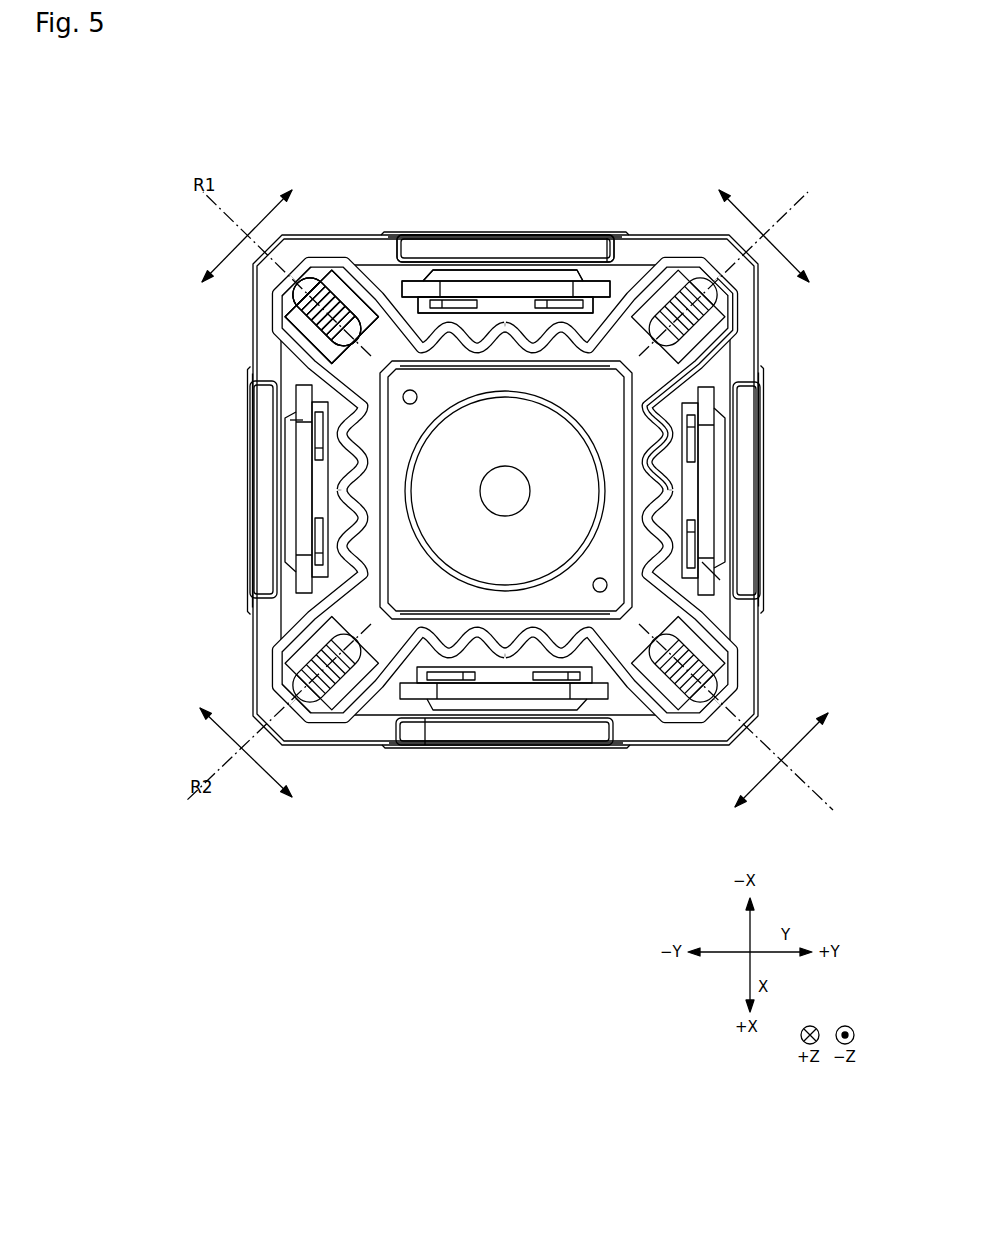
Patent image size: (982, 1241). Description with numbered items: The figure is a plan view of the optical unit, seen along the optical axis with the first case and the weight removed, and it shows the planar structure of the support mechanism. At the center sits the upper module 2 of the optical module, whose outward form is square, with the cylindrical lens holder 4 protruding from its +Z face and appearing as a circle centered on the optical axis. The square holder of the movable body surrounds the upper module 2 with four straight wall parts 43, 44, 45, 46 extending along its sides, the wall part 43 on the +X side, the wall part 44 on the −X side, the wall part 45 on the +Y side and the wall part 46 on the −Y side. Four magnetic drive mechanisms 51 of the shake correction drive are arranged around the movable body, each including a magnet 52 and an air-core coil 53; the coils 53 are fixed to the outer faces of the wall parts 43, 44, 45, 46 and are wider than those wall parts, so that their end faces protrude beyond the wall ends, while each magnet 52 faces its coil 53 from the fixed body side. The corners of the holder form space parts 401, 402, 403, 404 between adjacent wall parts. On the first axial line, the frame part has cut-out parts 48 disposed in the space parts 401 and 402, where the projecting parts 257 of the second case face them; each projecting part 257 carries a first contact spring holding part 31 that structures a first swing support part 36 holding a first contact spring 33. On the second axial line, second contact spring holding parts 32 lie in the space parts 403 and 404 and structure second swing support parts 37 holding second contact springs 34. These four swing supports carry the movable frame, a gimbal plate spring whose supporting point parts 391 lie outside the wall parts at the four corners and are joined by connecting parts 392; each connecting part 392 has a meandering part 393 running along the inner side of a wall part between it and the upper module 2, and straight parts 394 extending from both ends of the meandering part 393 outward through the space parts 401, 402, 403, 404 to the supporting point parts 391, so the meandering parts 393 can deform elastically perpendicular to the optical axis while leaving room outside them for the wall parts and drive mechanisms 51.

The upper module 2 is at (602, 408).
The lens holder 4 is at (528, 449).
The first contact spring holding part 31 is at (305, 340).
The second contact spring holding part 32 is at (705, 330).
The first contact spring 33 is at (285, 300).
The second contact spring 34 is at (700, 300).
The first swing support part 36 is at (155, 318).
The second swing support part 37 is at (843, 280).
The wall part 43 is at (425, 740).
The wall part 44 is at (607, 262).
The wall part 45 is at (702, 562).
The wall part 46 is at (303, 420).
The cut-out part 48 is at (365, 260).
The magnetic drive mechanism 51 is at (590, 125).
The magnet 52 is at (542, 237).
The coil 53 is at (597, 262).
The projecting part 257 is at (418, 338).
The supporting point part 391 is at (684, 292).
The connecting part 392 is at (535, 187).
The meandering part 393 is at (480, 290).
The straight part 394 is at (440, 283).
The space part 401 is at (782, 760).
The space part 402 is at (246, 256).
The space part 403 is at (267, 775).
The space part 404 is at (770, 258).